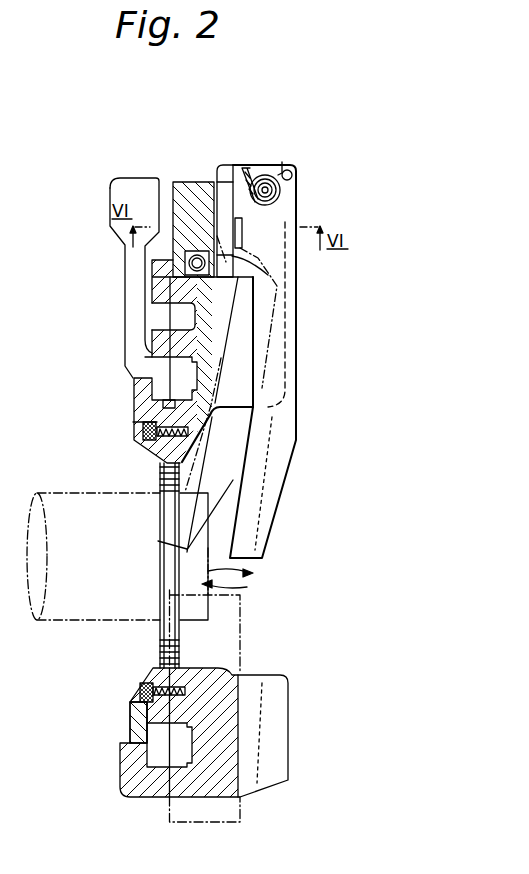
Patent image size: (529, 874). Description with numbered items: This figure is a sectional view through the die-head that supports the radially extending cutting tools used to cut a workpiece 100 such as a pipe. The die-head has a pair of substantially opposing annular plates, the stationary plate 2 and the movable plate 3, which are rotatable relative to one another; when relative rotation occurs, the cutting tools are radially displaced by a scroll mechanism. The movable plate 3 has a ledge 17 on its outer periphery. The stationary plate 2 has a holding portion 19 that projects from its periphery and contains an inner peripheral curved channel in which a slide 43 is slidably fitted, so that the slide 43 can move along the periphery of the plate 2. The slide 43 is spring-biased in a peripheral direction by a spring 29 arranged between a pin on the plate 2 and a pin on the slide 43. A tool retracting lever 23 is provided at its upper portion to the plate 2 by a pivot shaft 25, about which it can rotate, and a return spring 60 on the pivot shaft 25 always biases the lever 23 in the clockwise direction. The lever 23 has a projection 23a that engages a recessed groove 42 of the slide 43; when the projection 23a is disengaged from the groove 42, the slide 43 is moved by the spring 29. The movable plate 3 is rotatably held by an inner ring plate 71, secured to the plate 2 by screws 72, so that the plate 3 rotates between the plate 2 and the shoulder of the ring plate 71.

The stationary plate 2 is at (245, 382).
The movable plate 3 is at (132, 357).
The ledge 17 is at (124, 243).
The holding portion 19 is at (247, 338).
The tool retracting lever 23 is at (288, 456).
The projection of tool retracting lever 23a is at (277, 284).
The pivot shaft 25 is at (282, 196).
The spring 29 is at (232, 226).
The recessed groove 42 is at (225, 188).
The slide 43 is at (192, 188).
The return spring 60 is at (284, 163).
The inner ring plate 71 is at (133, 712).
The screws 72 is at (152, 452).
The workpiece 100 is at (57, 622).